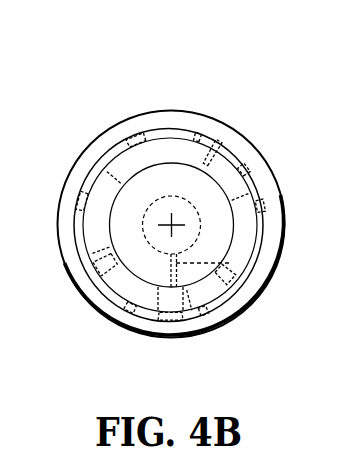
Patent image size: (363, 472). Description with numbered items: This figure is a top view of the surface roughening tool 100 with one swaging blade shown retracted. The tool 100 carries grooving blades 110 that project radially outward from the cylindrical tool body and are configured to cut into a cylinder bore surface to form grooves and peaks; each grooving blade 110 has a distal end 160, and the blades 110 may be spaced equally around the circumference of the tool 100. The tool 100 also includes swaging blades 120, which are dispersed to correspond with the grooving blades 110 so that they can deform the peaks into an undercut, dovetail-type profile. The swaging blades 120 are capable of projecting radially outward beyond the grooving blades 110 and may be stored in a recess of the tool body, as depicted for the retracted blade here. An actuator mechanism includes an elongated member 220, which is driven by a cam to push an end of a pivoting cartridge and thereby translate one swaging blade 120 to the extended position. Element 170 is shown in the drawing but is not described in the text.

The surface roughening tool 100 is at (246, 112).
The grooving blades 110 is at (110, 153).
The swaging blades 120 is at (190, 322).
The distal end 160 is at (221, 316).
The spokes 170 is at (163, 330).
The elongated member 220 is at (280, 259).